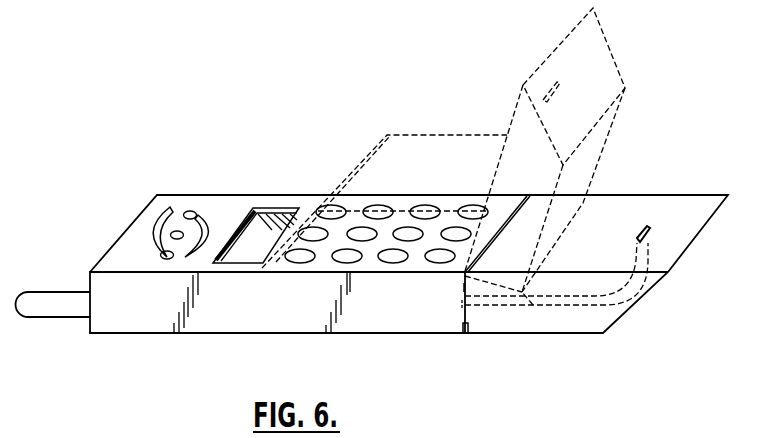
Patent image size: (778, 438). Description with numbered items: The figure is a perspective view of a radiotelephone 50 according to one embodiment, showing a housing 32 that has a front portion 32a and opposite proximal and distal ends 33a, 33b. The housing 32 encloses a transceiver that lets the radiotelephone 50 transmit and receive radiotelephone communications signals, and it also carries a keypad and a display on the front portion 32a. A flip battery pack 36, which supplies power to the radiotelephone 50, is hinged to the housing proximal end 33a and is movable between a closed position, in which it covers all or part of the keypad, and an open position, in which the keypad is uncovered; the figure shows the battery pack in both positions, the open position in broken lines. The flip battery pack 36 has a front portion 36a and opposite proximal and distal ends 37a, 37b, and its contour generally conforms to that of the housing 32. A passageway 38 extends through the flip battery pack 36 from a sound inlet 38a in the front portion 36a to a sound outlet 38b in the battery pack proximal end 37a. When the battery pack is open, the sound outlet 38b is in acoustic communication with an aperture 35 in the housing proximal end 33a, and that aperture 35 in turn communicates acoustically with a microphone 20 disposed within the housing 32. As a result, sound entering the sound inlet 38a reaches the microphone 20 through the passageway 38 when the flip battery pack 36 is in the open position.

The radiotelephone 50 is at (148, 186).
The housing 32 is at (363, 320).
The front portion 32a is at (222, 235).
The proximal end 33a is at (466, 333).
The distal end 33b is at (88, 327).
The aperture 35 is at (462, 300).
The flip battery pack 36 is at (537, 72).
The front portion 36a is at (610, 208).
The proximal end 37a is at (464, 290).
The distal end 37b is at (647, 288).
The passageway 38 is at (533, 305).
The sound inlet 38a is at (645, 224).
The sound outlet 38b is at (467, 302).
The microphone 20 is at (462, 300).